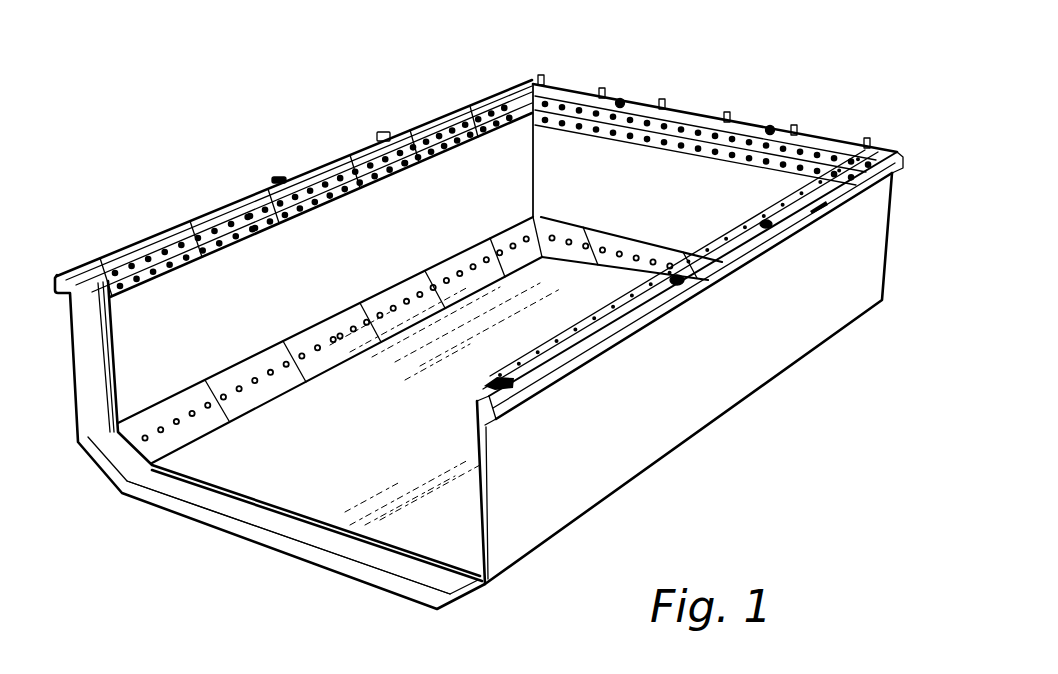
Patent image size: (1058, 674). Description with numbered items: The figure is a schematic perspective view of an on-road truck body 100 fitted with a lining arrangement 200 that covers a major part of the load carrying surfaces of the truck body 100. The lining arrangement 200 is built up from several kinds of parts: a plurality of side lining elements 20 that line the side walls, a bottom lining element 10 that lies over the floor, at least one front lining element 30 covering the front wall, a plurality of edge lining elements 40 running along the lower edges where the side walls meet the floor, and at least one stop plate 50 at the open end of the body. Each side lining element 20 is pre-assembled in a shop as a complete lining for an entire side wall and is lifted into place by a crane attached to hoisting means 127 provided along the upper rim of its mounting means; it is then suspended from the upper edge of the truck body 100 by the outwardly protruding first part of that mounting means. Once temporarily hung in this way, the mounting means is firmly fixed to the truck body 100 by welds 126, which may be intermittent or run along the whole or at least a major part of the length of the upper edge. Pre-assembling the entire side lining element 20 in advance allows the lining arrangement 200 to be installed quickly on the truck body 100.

The truck body 100 is at (97, 57).
The bottom lining element 10 is at (290, 497).
The side lining element 20 is at (370, 207).
The front lining element 30 is at (680, 170).
The edge lining element 40 is at (163, 410).
The stop plate 50 is at (375, 551).
The weld 126 is at (557, 364).
The hoisting means 127 is at (280, 178).
The lining arrangement 200 is at (233, 257).